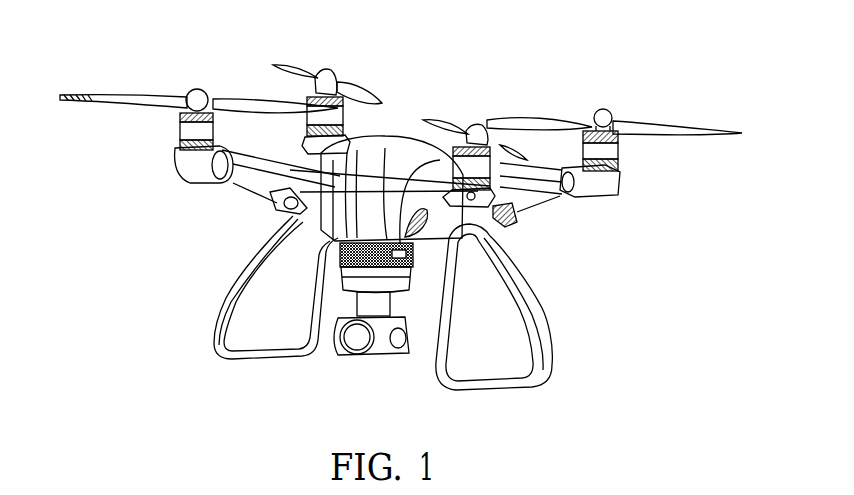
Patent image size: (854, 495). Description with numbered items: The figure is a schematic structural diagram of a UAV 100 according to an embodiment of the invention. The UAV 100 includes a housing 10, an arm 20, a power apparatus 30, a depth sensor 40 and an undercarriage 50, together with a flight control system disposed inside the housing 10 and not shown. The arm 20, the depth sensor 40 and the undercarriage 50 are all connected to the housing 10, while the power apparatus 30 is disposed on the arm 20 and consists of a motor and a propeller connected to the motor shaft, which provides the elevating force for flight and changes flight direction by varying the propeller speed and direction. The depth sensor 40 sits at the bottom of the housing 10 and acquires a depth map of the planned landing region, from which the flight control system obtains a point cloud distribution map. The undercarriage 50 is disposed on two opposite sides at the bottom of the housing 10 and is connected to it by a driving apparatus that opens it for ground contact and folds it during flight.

The UAV 100 is at (60, 21).
The housing 10 is at (372, 205).
The arm 20 is at (555, 197).
The power apparatus 30 is at (187, 128).
The depth sensor 40 is at (355, 342).
The undercarriage 50 is at (227, 310).